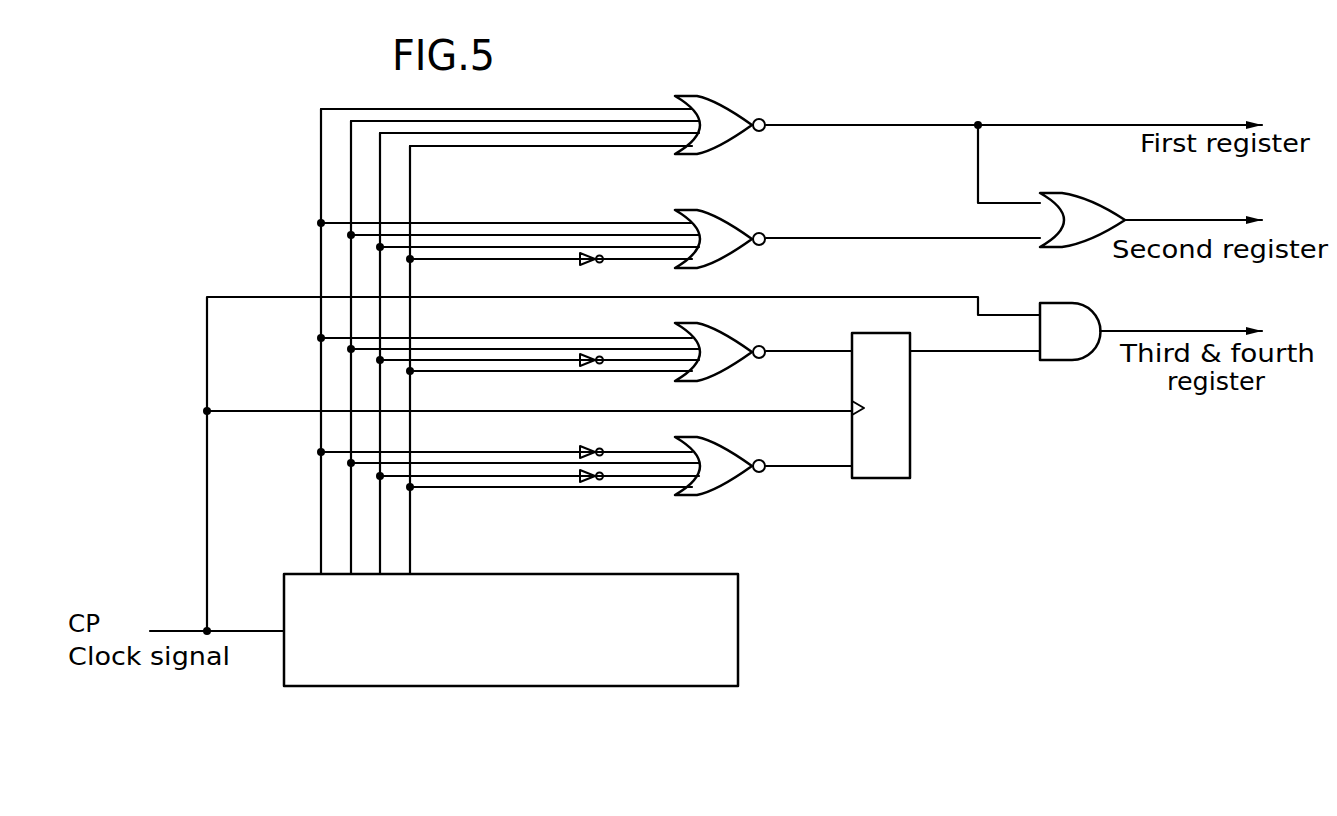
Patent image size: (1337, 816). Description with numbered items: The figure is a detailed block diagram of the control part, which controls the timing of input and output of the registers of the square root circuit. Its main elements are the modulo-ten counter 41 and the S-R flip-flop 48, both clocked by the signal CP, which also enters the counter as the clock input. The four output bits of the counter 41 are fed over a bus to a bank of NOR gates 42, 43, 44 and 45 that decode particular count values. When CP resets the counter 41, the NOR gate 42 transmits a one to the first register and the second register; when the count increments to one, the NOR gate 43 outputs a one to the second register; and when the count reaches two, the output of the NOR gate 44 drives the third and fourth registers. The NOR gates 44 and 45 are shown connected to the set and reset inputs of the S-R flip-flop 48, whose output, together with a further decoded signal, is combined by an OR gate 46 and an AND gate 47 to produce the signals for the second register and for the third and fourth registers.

The MOD-10 counter 41 is at (738, 622).
The NOR gate 42 is at (735, 117).
The NOR gate 43 is at (738, 230).
The NOR gate 44 is at (738, 344).
The NOR gate 45 is at (738, 458).
The OR gate 46 is at (1085, 202).
The AND gate 47 is at (1048, 357).
The S-R flip-flop 48 is at (912, 458).